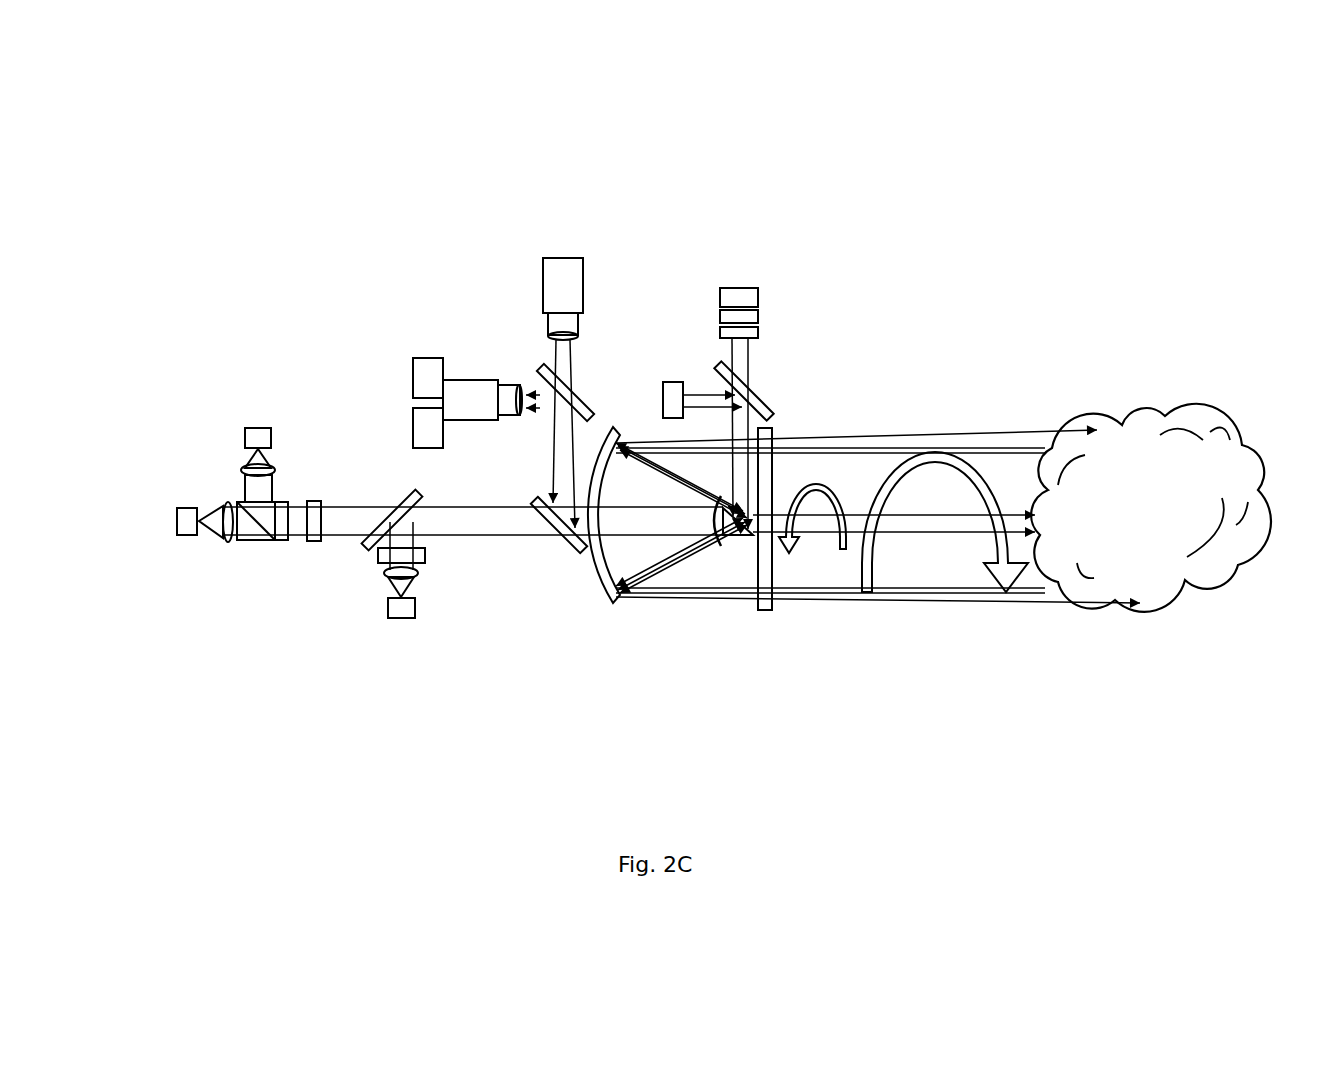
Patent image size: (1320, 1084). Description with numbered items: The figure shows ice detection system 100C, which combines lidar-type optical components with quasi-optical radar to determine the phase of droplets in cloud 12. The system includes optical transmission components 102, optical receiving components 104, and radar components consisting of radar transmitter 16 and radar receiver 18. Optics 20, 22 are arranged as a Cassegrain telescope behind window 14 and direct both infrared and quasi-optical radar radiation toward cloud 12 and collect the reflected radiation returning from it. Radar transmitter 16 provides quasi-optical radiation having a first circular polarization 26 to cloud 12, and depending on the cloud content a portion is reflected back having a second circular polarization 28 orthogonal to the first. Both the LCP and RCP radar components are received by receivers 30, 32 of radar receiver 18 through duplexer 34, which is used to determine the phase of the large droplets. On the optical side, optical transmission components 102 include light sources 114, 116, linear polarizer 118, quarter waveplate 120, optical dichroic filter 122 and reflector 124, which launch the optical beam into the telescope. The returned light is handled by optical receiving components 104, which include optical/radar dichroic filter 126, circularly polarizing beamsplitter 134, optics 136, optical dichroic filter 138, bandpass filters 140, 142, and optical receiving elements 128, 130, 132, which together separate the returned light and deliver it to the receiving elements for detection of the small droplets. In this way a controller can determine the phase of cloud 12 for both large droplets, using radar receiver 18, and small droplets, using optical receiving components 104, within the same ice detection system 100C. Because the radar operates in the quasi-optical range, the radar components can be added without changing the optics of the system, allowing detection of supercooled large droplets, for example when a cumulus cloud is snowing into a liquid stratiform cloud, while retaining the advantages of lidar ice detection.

The ice detection system 100C is at (1102, 240).
The optical transmission components 102 is at (873, 313).
The optical receiving components 104 is at (250, 615).
The cloud 12 is at (1225, 415).
The window 14 is at (775, 435).
The radar transmitter 16 is at (562, 258).
The radar receiver 18 is at (487, 283).
The optics 20 is at (731, 541).
The optics 22 is at (603, 588).
The first circular polarization 26 is at (978, 468).
The second circular polarization 28 is at (822, 490).
The receiver 30 is at (425, 358).
The receiver 32 is at (425, 448).
The duplexer 34 is at (472, 422).
The light source 114 is at (665, 382).
The light source 116 is at (738, 288).
The linear polarizer 118 is at (758, 312).
The quarter waveplate 120 is at (762, 333).
The optical dichroic filter 122 is at (762, 390).
The reflector 124 is at (744, 542).
The optical/radar dichroic filter 126 is at (540, 532).
The optical receiving element 128 is at (400, 618).
The optical receiving element 130 is at (177, 515).
The optical receiving element 132 is at (258, 428).
The circularly polarizing beamsplitter 134 is at (257, 542).
The optics 136 is at (228, 512).
The optical dichroic filter 138 is at (398, 500).
The bandpass filter 140 is at (377, 553).
The bandpass filter 142 is at (314, 501).